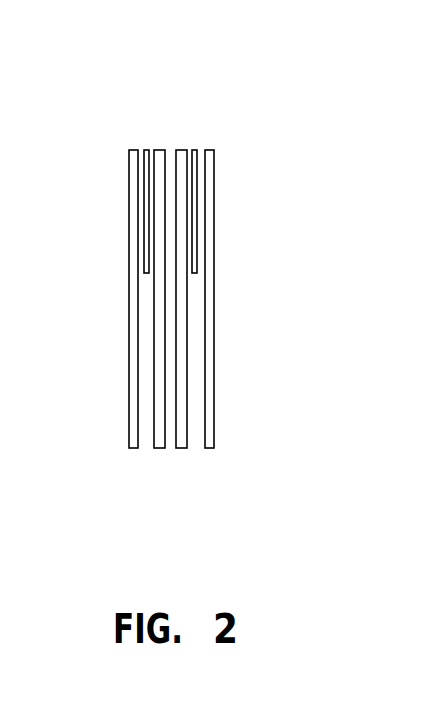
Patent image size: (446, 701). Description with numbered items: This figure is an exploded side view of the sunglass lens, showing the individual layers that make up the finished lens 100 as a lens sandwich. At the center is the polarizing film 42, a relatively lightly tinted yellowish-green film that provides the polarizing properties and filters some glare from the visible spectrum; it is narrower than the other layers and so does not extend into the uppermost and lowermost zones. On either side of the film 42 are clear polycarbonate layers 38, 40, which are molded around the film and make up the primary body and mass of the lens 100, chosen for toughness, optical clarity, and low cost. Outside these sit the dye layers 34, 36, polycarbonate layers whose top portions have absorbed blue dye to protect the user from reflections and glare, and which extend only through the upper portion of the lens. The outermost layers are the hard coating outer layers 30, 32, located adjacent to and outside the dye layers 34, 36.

The finished lens 100 is at (201, 282).
The hard coating outer layer 30 is at (127, 400).
The hard coating outer layer 32 is at (215, 400).
The dye layer 34 is at (147, 150).
The dye layer 36 is at (197, 150).
The polycarbonate layer 38 is at (155, 450).
The polycarbonate layer 40 is at (188, 450).
The polarizing film 42 is at (168, 148).